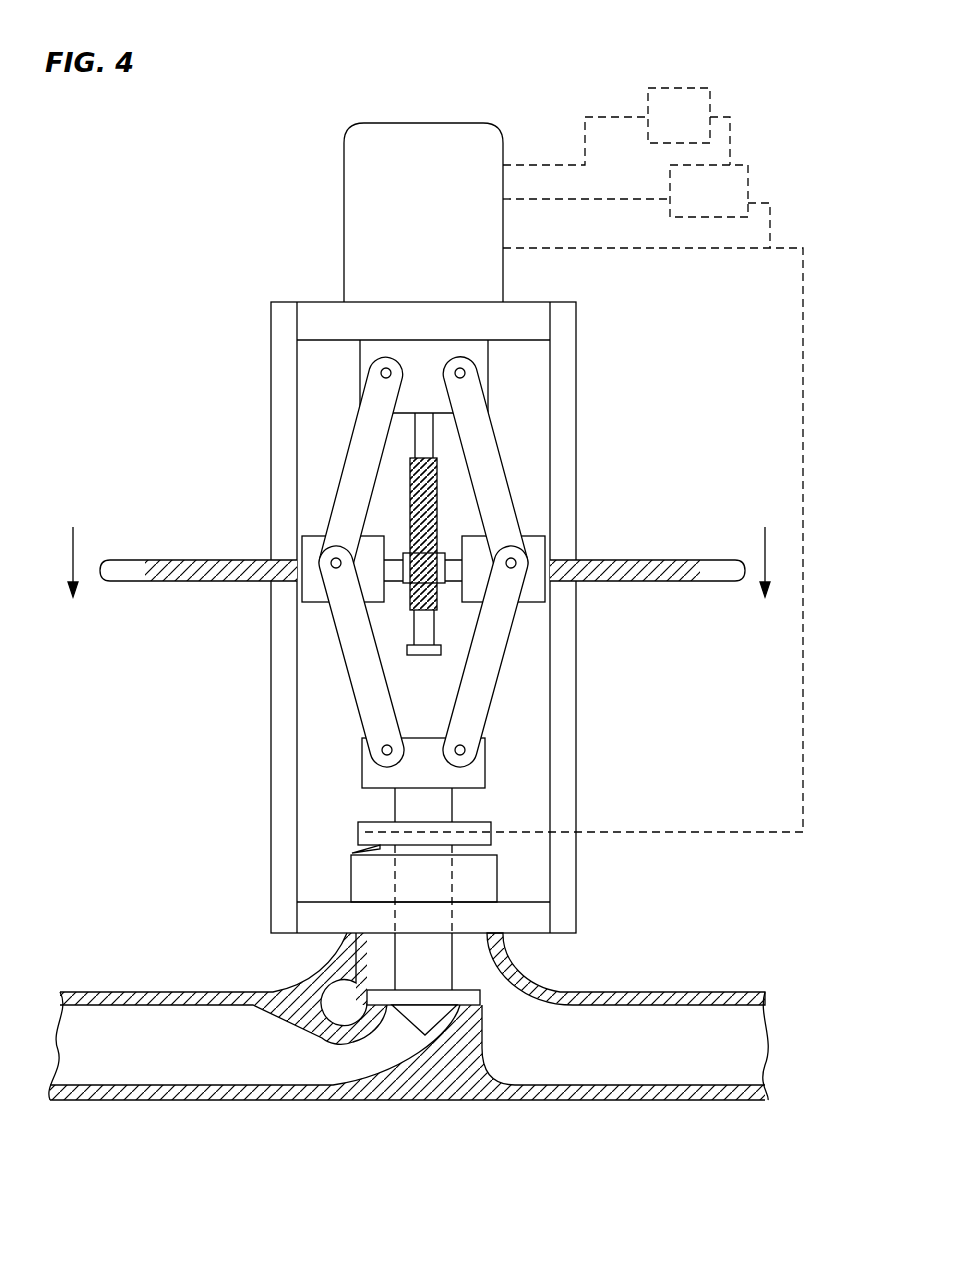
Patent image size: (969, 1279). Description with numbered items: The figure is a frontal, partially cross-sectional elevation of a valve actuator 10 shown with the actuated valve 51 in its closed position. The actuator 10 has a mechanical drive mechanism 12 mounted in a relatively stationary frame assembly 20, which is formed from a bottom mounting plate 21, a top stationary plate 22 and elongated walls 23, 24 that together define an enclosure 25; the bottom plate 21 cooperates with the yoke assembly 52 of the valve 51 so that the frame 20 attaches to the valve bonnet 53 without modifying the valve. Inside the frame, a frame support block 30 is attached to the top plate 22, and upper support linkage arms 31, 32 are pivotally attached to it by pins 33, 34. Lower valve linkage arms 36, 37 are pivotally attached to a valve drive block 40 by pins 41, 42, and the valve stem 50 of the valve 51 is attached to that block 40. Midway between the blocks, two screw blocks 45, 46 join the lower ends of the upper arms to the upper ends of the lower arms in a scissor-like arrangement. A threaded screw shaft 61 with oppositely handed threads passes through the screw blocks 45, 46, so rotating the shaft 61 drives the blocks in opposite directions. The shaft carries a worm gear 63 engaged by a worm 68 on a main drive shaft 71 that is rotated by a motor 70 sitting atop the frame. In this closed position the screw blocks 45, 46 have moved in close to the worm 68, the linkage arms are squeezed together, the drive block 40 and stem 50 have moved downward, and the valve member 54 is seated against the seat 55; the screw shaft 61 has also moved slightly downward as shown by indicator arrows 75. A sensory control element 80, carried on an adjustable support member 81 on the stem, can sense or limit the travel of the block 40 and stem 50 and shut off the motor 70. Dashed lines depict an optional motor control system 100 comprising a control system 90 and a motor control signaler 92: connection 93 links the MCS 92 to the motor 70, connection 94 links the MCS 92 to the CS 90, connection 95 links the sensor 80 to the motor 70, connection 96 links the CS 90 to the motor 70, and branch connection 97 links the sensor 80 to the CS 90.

The motor control system 100 is at (812, 83).
The valve actuator 10 is at (160, 186).
The mechanical drive mechanism 12 is at (312, 481).
The frame assembly 20 is at (422, 605).
The bottom mounting plate 21 is at (302, 935).
The top stationary plate 22 is at (537, 310).
The elongated wall 23 is at (274, 744).
The elongated wall 24 is at (570, 750).
The enclosure 25 is at (610, 450).
The frame support block 30 is at (360, 350).
The upper support linkage arm 31 is at (366, 440).
The upper support linkage arm 32 is at (487, 446).
The pin 33 is at (391, 358).
The pin 34 is at (464, 358).
The lower valve linkage arm 36 is at (360, 656).
The lower valve linkage arm 37 is at (485, 702).
The valve drive block 40 is at (362, 760).
The pin 41 is at (392, 745).
The pin 42 is at (466, 750).
The screw block 45 is at (302, 596).
The screw block 46 is at (545, 596).
The valve stem 50 is at (452, 806).
The valve 51 is at (512, 1058).
The yoke assembly 52 is at (517, 938).
The valve bonnet 53 is at (492, 870).
The valve member 54 is at (482, 997).
The valve seat 55 is at (352, 1042).
The screw shaft 61 is at (200, 558).
The worm gear 63 is at (420, 546).
The worm 68 is at (412, 500).
The motor 70 is at (344, 208).
The main drive shaft 71 is at (437, 648).
The indicator arrows 75 is at (70, 540).
The sensory control element 80 is at (360, 848).
The support member 81 is at (358, 833).
The control system 90 is at (748, 172).
The motor control signaler 92 is at (700, 88).
The connection 93 is at (603, 117).
The connection 94 is at (730, 128).
The connection 95 is at (622, 247).
The connection 96 is at (628, 199).
The branch connection 97 is at (770, 230).